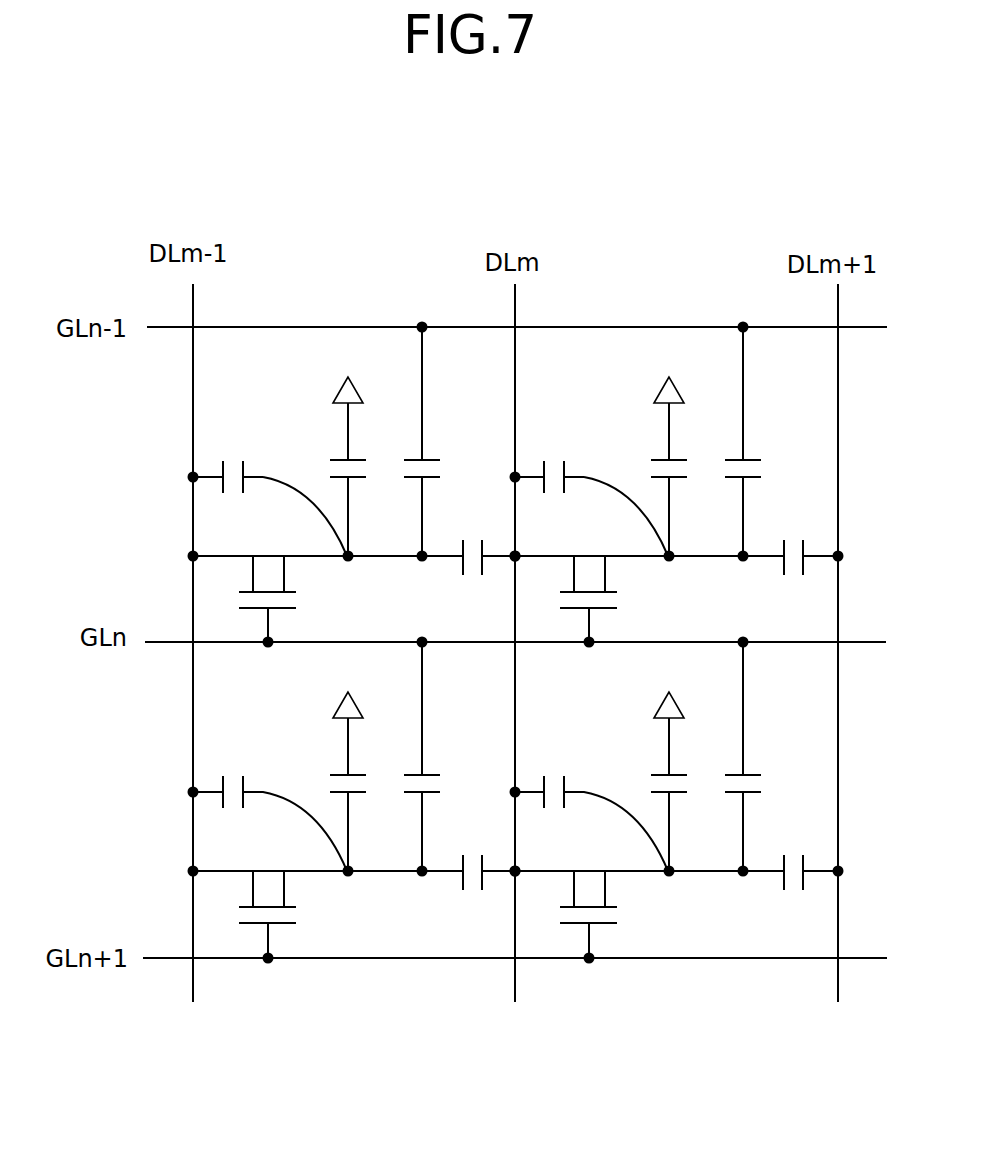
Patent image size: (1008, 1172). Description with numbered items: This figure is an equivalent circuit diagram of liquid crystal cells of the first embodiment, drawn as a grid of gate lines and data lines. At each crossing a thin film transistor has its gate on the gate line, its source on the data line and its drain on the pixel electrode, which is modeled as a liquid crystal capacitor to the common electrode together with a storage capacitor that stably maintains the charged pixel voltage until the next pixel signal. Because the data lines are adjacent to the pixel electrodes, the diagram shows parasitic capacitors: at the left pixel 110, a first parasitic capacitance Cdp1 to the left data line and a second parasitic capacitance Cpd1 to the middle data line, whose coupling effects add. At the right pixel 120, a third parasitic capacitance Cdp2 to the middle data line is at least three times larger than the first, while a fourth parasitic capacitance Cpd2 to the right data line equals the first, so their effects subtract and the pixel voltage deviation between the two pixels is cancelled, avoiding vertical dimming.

The left pixel 110 is at (389, 308).
The right pixel 120 is at (700, 308).
The first parasitic capacitance Cdp1 is at (233, 460).
The second parasitic capacitance Cpd1 is at (473, 540).
The third parasitic capacitance Cdp2 is at (555, 460).
The fourth parasitic capacitance Cpd2 is at (794, 540).